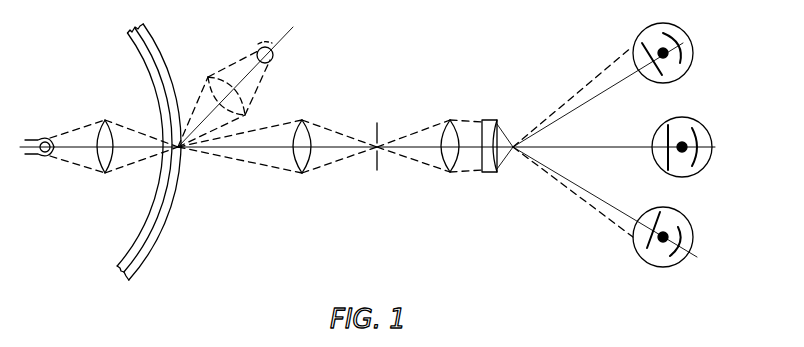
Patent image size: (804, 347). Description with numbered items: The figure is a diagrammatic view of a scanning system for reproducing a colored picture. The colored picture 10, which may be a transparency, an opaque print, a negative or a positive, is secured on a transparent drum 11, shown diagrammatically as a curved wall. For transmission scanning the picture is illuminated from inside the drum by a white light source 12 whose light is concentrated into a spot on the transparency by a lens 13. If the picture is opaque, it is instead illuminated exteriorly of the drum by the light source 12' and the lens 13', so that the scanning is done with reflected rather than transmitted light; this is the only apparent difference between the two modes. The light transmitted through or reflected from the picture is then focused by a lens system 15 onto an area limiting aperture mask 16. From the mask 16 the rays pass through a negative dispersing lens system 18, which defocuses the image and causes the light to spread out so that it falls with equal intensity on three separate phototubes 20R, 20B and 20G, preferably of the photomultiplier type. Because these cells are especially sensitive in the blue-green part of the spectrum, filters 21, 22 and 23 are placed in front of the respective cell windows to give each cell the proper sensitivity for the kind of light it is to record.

The colored picture 10 is at (146, 34).
The transparent drum 11 is at (135, 52).
The white light source 12 is at (39, 165).
The lens 13 is at (102, 160).
The light source 12' is at (287, 52).
The lens 13' is at (249, 96).
The lens system 15 is at (307, 127).
The area limiting aperture mask 16 is at (380, 123).
The negative dispersing lens system 18 is at (485, 119).
The phototube 20R is at (693, 52).
The phototube 20B is at (712, 131).
The phototube 20G is at (693, 235).
The filter 21 is at (656, 74).
The filter 22 is at (663, 157).
The filter 23 is at (668, 265).